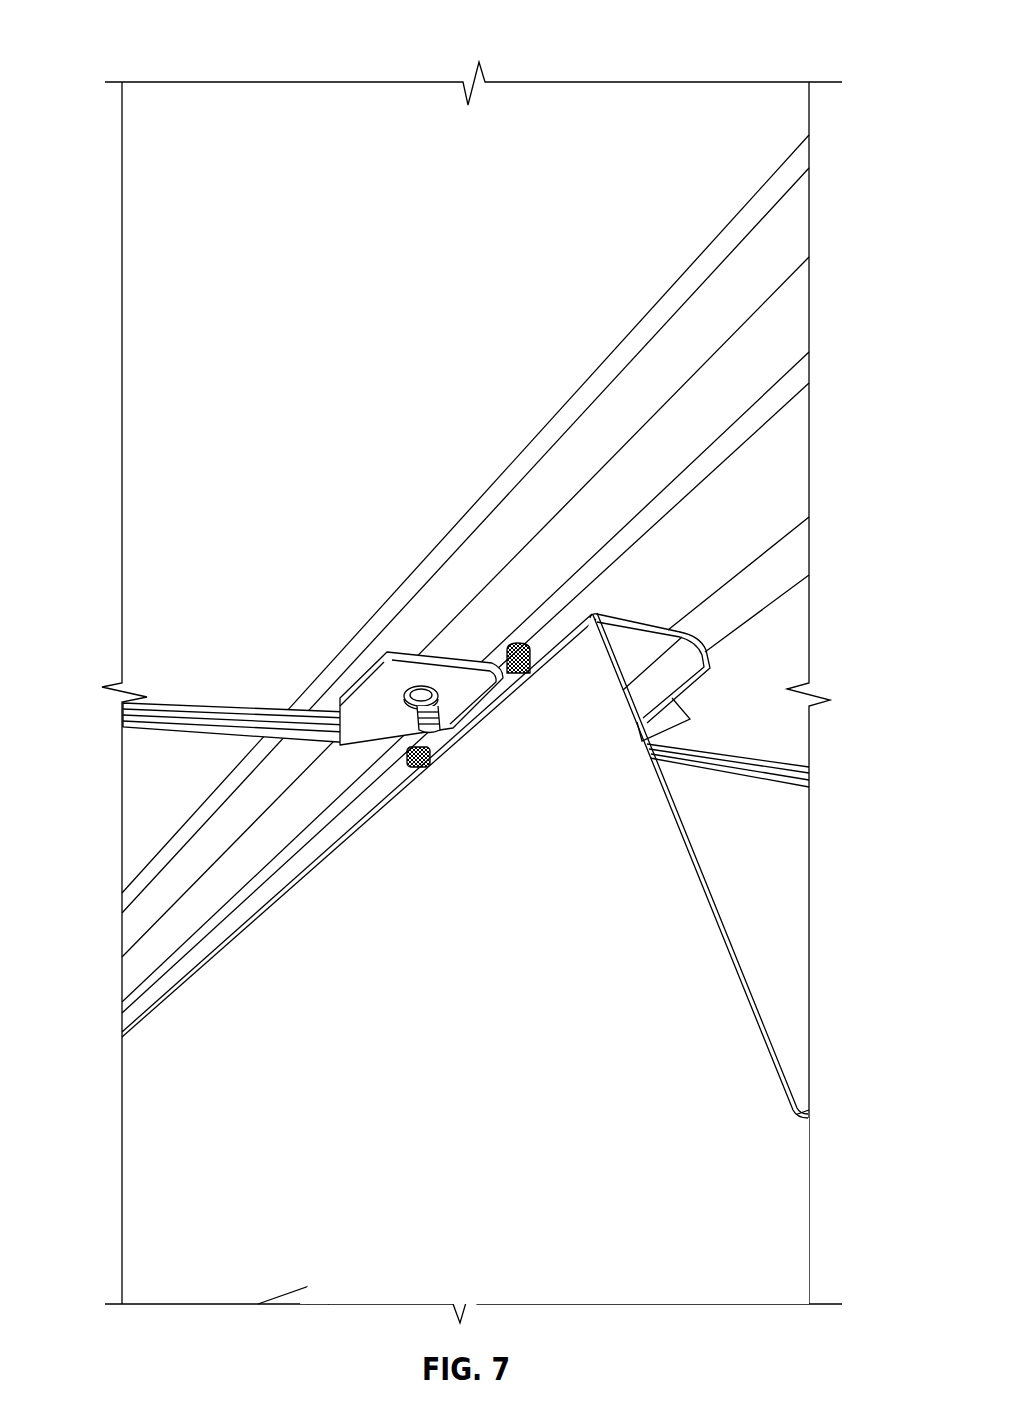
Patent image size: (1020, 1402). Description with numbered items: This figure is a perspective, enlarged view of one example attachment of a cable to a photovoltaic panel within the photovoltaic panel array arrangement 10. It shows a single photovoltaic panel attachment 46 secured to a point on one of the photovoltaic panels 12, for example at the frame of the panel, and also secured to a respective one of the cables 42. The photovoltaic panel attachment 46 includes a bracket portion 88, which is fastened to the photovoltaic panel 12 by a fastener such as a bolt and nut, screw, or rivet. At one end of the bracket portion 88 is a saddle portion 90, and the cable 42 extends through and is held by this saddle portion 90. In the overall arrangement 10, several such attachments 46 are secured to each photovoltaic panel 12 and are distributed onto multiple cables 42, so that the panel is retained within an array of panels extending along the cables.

The photovoltaic panel array arrangement 10 is at (98, 44).
The photovoltaic panel 12 is at (152, 377).
The cable 42 is at (183, 725).
The photovoltaic panel attachment 46 is at (358, 661).
The bracket portion 88 is at (432, 686).
The saddle portion 90 is at (380, 727).